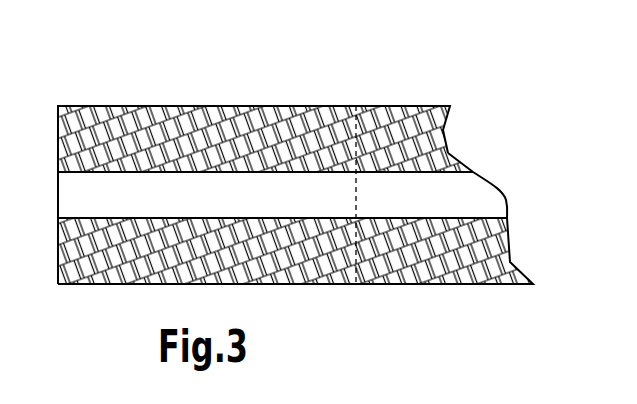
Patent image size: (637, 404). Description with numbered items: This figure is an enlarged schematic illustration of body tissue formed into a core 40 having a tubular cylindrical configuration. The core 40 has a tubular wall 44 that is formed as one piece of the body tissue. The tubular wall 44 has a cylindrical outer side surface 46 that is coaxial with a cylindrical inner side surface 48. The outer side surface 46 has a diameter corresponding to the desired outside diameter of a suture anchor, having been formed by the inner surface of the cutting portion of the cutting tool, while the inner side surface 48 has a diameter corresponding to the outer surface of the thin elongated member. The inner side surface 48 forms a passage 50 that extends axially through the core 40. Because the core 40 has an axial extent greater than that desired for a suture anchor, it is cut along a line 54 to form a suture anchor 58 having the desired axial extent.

The core 40 is at (282, 80).
The tubular wall 44 is at (158, 146).
The cylindrical outer side surface 46 is at (387, 106).
The cylindrical inner side surface 48 is at (440, 168).
The passage 50 is at (468, 196).
The cutting line 54 is at (356, 253).
The suture anchor 58 is at (109, 300).